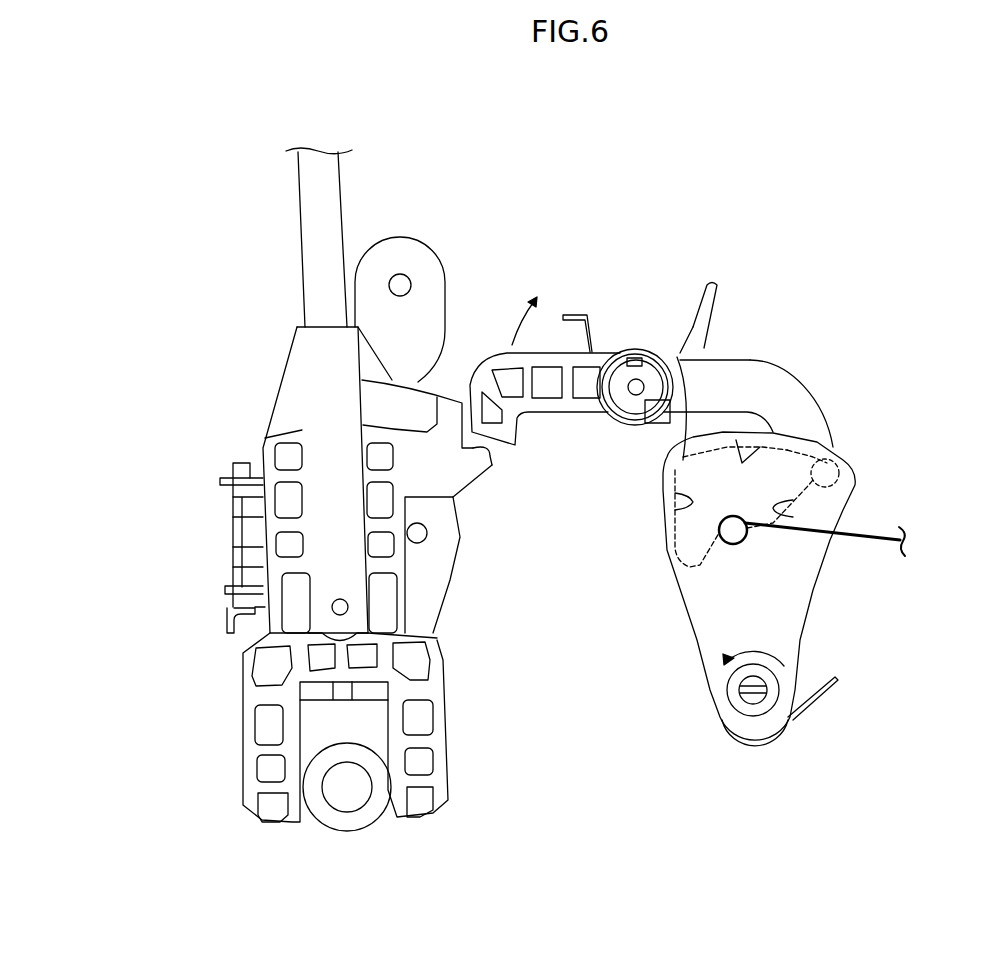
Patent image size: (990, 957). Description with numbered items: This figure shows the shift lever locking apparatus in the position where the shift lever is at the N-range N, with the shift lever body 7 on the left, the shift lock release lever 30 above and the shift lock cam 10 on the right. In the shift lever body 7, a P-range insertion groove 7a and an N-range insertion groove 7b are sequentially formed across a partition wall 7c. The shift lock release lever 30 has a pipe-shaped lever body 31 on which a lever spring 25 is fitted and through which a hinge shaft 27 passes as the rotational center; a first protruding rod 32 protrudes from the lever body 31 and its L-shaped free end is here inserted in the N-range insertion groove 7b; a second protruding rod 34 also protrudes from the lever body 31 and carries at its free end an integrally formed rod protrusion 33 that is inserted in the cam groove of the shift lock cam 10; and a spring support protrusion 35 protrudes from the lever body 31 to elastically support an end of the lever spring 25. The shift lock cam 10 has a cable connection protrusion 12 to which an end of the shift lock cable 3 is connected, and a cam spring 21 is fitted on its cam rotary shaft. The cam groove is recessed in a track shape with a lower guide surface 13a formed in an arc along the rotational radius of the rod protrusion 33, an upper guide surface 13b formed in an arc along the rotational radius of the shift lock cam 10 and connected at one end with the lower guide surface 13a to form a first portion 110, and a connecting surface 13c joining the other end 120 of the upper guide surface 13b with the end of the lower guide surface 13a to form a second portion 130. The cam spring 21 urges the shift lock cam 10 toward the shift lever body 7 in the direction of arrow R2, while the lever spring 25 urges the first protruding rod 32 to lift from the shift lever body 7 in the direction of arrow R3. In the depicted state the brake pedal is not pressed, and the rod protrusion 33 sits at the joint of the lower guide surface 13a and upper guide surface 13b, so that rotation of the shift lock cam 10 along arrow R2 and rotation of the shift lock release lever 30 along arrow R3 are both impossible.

The N-range N is at (327, 376).
The shift lever body 7 is at (247, 677).
The P-range insertion groove 7a is at (430, 410).
The N-range insertion groove 7b is at (493, 452).
The partition wall 7c is at (446, 415).
The first protruding rod 32 is at (490, 352).
The arrow R3 is at (526, 308).
The lever spring 25 is at (577, 314).
The lever body 31 is at (635, 420).
The hinge shaft 27 is at (623, 370).
The spring support protrusion 35 is at (703, 297).
The other end of upper guide surface 120 is at (688, 397).
The shift lock release lever 30 is at (729, 350).
The second protruding rod 34 is at (788, 393).
The shift lock cam 10 is at (700, 627).
The arrow R2 is at (753, 644).
The second portion 130 is at (680, 590).
The first portion 110 is at (840, 458).
The rod protrusion 33 is at (828, 470).
The upper guide surface 13b is at (742, 455).
The lower guide surface 13a is at (793, 507).
The connecting surface 13c is at (675, 510).
The cable connection protrusion 12 is at (722, 534).
The shift lock cable 3 is at (873, 545).
The cam spring 21 is at (827, 692).